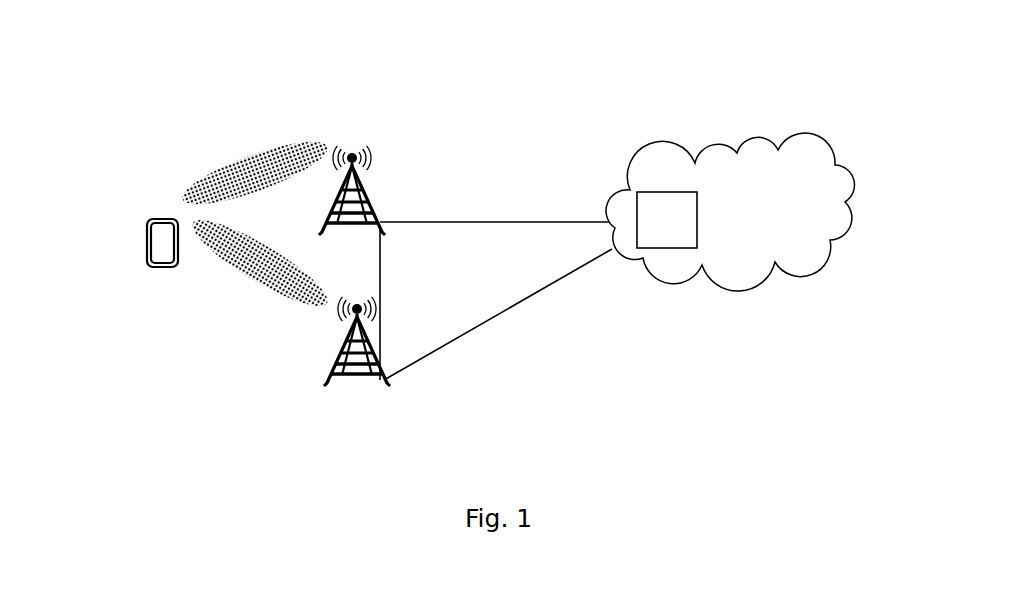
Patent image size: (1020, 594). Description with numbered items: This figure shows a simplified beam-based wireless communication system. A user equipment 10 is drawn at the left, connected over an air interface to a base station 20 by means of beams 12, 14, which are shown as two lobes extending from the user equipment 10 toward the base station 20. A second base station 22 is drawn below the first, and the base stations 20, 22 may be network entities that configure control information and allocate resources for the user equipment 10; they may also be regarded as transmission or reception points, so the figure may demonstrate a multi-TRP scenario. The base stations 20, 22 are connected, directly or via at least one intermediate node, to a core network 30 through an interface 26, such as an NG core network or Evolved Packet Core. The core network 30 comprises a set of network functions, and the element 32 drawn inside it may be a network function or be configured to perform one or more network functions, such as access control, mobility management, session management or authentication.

The user equipment 10 is at (171, 218).
The beam 12 is at (257, 164).
The beam 14 is at (237, 250).
The base station 20 is at (372, 212).
The base station 22 is at (338, 371).
The interface 26 is at (480, 222).
The core network 30 is at (764, 221).
The network function element 32 is at (684, 229).